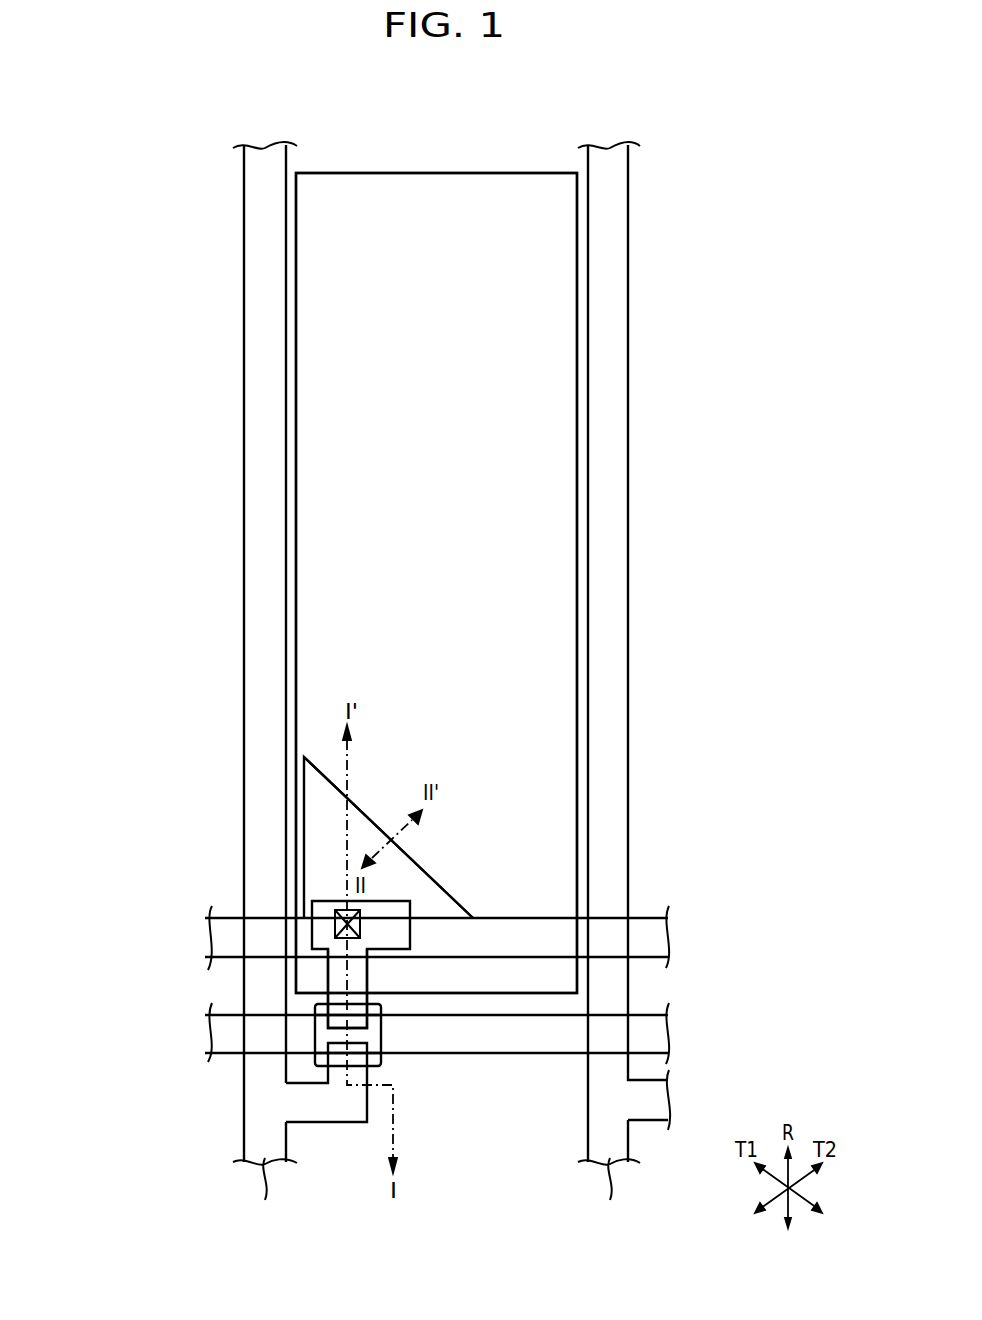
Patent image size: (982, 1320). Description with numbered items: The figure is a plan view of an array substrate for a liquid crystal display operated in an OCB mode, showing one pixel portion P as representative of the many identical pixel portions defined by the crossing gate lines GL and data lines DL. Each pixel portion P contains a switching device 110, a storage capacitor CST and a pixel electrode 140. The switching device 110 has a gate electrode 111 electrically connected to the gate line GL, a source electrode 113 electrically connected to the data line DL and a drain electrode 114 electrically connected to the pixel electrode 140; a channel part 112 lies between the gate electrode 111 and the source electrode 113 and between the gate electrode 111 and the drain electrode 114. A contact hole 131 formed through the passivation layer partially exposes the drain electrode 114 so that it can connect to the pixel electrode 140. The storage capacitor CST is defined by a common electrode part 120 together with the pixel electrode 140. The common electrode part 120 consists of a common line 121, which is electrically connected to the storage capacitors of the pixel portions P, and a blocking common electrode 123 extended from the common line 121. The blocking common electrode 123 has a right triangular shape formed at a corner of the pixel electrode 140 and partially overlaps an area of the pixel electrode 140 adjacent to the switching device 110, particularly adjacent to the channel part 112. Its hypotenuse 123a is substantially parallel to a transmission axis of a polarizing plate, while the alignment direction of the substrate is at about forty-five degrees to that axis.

The pixel portion P is at (429, 481).
The data line DL is at (451, 685).
The gate line GL is at (660, 1033).
The storage capacitor CST is at (352, 804).
The common electrode part 120 is at (381, 863).
The common line 121 is at (210, 941).
The blocking common electrode 123 is at (318, 884).
The hypotenuse 123a is at (442, 888).
The pixel electrode 140 is at (344, 645).
The contact hole 131 is at (335, 926).
The switching device 110 is at (239, 1053).
The gate electrode 111 is at (315, 1038).
The channel part 112 is at (315, 1056).
The source electrode 113 is at (300, 1083).
The drain electrode 114 is at (328, 1004).